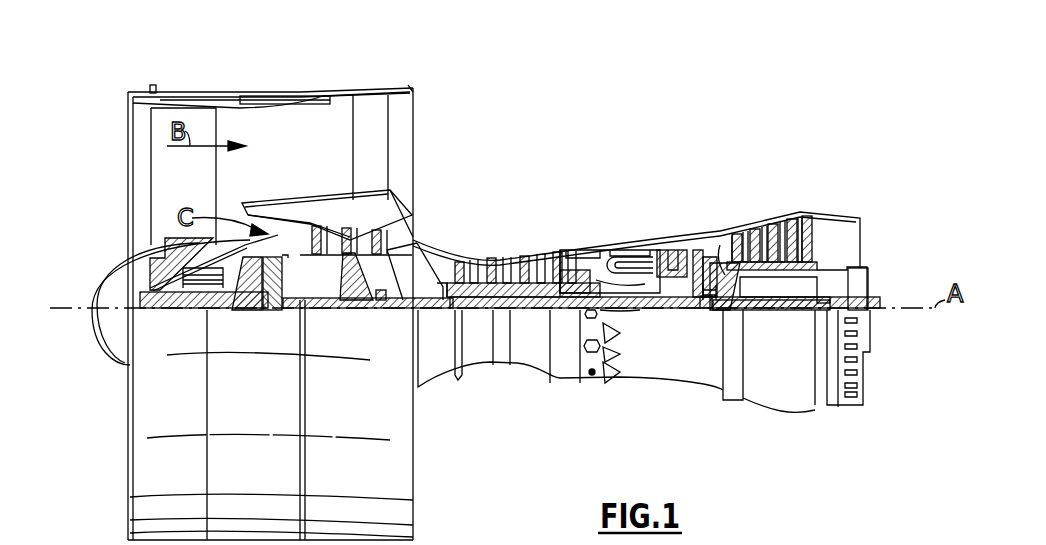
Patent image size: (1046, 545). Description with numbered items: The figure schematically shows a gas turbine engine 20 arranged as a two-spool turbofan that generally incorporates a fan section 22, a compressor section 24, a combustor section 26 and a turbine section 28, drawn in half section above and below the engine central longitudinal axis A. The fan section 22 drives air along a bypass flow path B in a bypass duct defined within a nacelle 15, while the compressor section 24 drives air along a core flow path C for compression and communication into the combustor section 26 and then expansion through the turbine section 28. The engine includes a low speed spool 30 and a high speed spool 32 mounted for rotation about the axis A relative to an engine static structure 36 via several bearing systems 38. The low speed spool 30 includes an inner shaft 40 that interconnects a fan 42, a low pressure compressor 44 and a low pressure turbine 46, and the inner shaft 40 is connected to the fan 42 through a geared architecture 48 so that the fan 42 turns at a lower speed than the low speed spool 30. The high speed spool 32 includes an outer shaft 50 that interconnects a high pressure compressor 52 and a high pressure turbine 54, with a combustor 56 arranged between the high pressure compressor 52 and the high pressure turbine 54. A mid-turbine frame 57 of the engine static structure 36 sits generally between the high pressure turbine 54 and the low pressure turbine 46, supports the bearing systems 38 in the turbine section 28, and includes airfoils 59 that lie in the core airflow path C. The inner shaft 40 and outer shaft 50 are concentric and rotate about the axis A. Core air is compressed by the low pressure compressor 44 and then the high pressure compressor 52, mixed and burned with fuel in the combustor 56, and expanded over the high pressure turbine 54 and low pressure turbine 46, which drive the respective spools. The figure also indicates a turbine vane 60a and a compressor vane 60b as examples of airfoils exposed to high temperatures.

The nacelle 15 is at (262, 90).
The gas turbine engine 20 is at (638, 118).
The fan section 22 is at (213, 80).
The compressor section 24 is at (443, 222).
The combustor section 26 is at (623, 218).
The turbine section 28 is at (736, 193).
The low speed spool 30 is at (532, 325).
The high speed spool 32 is at (577, 252).
The engine static structure 36 is at (564, 386).
The bearing systems 38 is at (378, 310).
The inner shaft 40 is at (427, 323).
The fan 42 is at (202, 191).
The low pressure compressor 44 is at (357, 237).
The low pressure turbine 46 is at (770, 215).
The geared architecture 48 is at (278, 296).
The outer shaft 50 is at (627, 305).
The high pressure compressor 52 is at (510, 255).
The high pressure turbine 54 is at (700, 240).
The combustor 56 is at (618, 262).
The mid-turbine frame 57 is at (727, 237).
The airfoils 59 is at (735, 284).
The turbine vane 60a is at (732, 232).
The compressor vane 60b is at (576, 266).